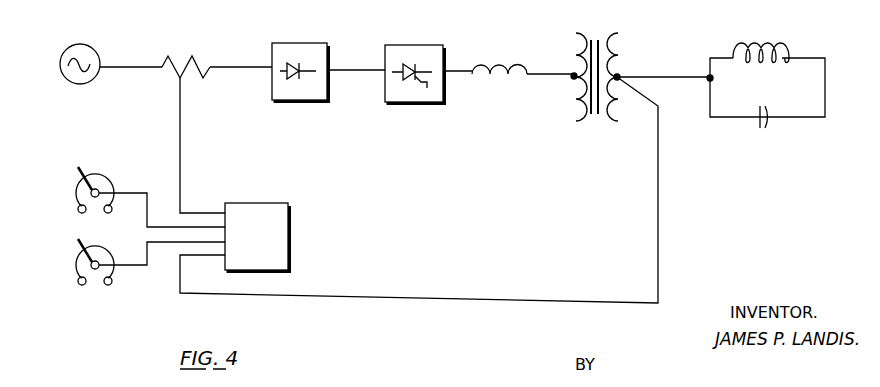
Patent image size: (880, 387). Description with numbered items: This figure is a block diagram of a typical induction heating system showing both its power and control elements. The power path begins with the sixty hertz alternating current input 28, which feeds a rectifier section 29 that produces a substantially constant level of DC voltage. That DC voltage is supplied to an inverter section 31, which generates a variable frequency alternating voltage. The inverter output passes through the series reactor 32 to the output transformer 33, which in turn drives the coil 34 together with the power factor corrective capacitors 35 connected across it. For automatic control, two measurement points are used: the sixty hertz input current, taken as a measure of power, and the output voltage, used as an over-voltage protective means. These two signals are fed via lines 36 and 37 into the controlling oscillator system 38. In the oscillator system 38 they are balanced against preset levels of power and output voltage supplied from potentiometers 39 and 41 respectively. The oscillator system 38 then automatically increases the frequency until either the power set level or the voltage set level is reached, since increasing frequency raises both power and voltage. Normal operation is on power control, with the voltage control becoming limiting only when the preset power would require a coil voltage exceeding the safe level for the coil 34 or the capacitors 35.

The alternating current input 28 is at (95, 53).
The rectifier section 29 is at (287, 43).
The inverter section 31 is at (410, 45).
The series reactor 32 is at (501, 63).
The output transformer 33 is at (606, 33).
The coil 34 is at (761, 45).
The power factor corrective capacitors 35 is at (761, 128).
The line 36 is at (181, 131).
The line 37 is at (414, 283).
The controlling oscillator system 38 is at (265, 248).
The potentiometer 39 is at (97, 176).
The potentiometer 41 is at (103, 249).